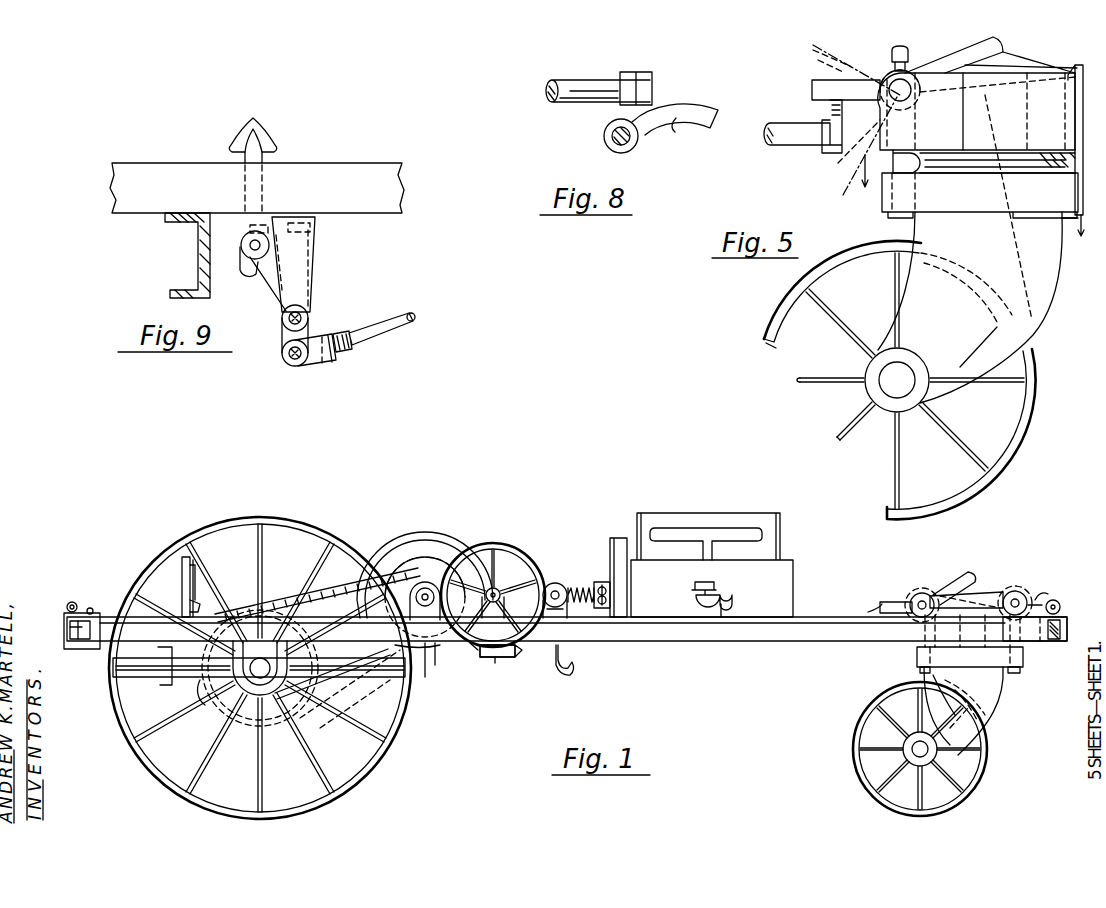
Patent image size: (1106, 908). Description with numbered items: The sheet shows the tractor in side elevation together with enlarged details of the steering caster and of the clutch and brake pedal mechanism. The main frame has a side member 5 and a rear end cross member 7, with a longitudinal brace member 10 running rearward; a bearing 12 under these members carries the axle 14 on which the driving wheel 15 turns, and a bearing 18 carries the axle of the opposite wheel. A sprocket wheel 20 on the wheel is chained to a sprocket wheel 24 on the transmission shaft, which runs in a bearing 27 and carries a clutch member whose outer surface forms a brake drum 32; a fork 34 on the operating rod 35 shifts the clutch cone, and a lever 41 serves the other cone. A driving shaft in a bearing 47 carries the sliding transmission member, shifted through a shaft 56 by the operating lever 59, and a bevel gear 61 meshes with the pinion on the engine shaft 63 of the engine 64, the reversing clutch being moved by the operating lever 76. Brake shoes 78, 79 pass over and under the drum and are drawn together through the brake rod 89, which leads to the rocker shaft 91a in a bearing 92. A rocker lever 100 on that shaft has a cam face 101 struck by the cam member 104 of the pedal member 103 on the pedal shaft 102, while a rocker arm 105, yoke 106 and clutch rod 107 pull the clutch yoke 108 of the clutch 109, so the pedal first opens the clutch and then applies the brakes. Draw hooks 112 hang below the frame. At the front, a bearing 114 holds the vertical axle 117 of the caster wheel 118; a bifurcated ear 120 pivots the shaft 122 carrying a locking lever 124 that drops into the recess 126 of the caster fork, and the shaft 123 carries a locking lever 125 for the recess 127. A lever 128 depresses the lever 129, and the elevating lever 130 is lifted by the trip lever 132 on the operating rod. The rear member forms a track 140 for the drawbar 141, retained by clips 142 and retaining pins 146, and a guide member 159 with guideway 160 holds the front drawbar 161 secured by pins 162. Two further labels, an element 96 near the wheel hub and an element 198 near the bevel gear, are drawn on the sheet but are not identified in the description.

In FIG. 1, the side member 5 is at (738, 638).
In FIG. 1, the rear end cross member 7 is at (78, 649).
In FIG. 9, the longitudinal brace member 10 is at (162, 163).
In FIG. 1, the bearing 12 is at (175, 690).
In FIG. 1, the axle 14 is at (240, 728).
In FIG. 1, the driving wheel 15 is at (145, 752).
In FIG. 1, the bearing 18 is at (900, 712).
In FIG. 1, the sprocket wheel 20 is at (318, 722).
In FIG. 1, the sprocket wheel 24 is at (282, 603).
In FIG. 1, the bearing 27 is at (425, 677).
In FIG. 1, the brake drum 32 is at (432, 555).
In FIG. 1, the fork 34 is at (490, 655).
In FIG. 8, the operating rod 35 is at (605, 138).
In FIG. 5, the operating rod 35 is at (790, 145).
In FIG. 1, the lever 41 is at (182, 580).
In FIG. 1, the bearing 47 is at (498, 660).
In FIG. 1, the shaft 56 is at (462, 660).
In FIG. 1, the operating lever 59 is at (195, 568).
In FIG. 1, the bevel gear 61 is at (510, 542).
In FIG. 1, the engine shaft 63 is at (578, 588).
In FIG. 1, the engine 64 is at (783, 530).
In FIG. 1, the operating lever 76 is at (253, 520).
In FIG. 1, the brake shoe 78 is at (442, 527).
In FIG. 1, the brake shoe 79 is at (448, 655).
In FIG. 1, the brake rod 89 is at (408, 715).
In FIG. 9, the rocker shaft 91a is at (308, 313).
In FIG. 9, the bearing 92 is at (200, 244).
In FIG. 1, the chain tightener 96 is at (203, 722).
In FIG. 9, the rocker lever 100 is at (313, 258).
In FIG. 9, the cam face 101 is at (269, 241).
In FIG. 9, the pedal shaft 102 is at (240, 247).
In FIG. 9, the pedal member 103 is at (272, 126).
In FIG. 1, the pedal member 103 is at (198, 604).
In FIG. 9, the cam member 104 is at (265, 298).
In FIG. 9, the rocker arm 105 is at (282, 345).
In FIG. 9, the yoke 106 is at (320, 365).
In FIG. 9, the clutch rod 107 is at (413, 323).
In FIG. 1, the clutch rod 107 is at (345, 690).
In FIG. 1, the clutch yoke 108 is at (612, 612).
In FIG. 1, the clutch 109 is at (600, 542).
In FIG. 1, the draw hook 112 is at (572, 676).
In FIG. 5, the bearing 114 is at (946, 72).
In FIG. 5, the vertical axle 117 is at (964, 114).
In FIG. 5, the caster wheel 118 is at (918, 232).
In FIG. 5, the bifurcated ear 120 is at (828, 148).
In FIG. 8, the shaft 122 is at (583, 80).
In FIG. 5, the shaft 122 is at (893, 82).
In FIG. 1, the shaft 122 is at (915, 613).
In FIG. 5, the shaft 123 is at (1072, 90).
In FIG. 1, the shaft 123 is at (1018, 592).
In FIG. 5, the locking lever 124 is at (905, 160).
In FIG. 1, the locking lever 124 is at (920, 674).
In FIG. 5, the locking lever 125 is at (1072, 170).
In FIG. 1, the locking lever 125 is at (1015, 673).
In FIG. 5, the recess 126 is at (875, 195).
In FIG. 1, the recess 126 is at (917, 658).
In FIG. 5, the recess 127 is at (1068, 215).
In FIG. 1, the recess 127 is at (1023, 658).
In FIG. 5, the lever 128 is at (998, 40).
In FIG. 1, the lever 128 is at (958, 576).
In FIG. 5, the lever 129 is at (1005, 60).
In FIG. 1, the lever 129 is at (982, 580).
In FIG. 8, the elevating lever 130 is at (652, 84).
In FIG. 5, the elevating lever 130 is at (812, 90).
In FIG. 1, the elevating lever 130 is at (892, 602).
In FIG. 8, the trip lever 132 is at (680, 122).
In FIG. 1, the trip lever 132 is at (868, 608).
In FIG. 1, the track 140 is at (70, 627).
In FIG. 1, the drawbar 141 is at (78, 631).
In FIG. 1, the clip 142 is at (92, 609).
In FIG. 1, the retaining pin 146 is at (72, 602).
In FIG. 1, the guide member 159 is at (1035, 603).
In FIG. 1, the guideway 160 is at (1064, 598).
In FIG. 1, the front drawbar 161 is at (1060, 641).
In FIG. 1, the pin 162 is at (1040, 595).
In FIG. 1, the pulley 198 is at (527, 570).